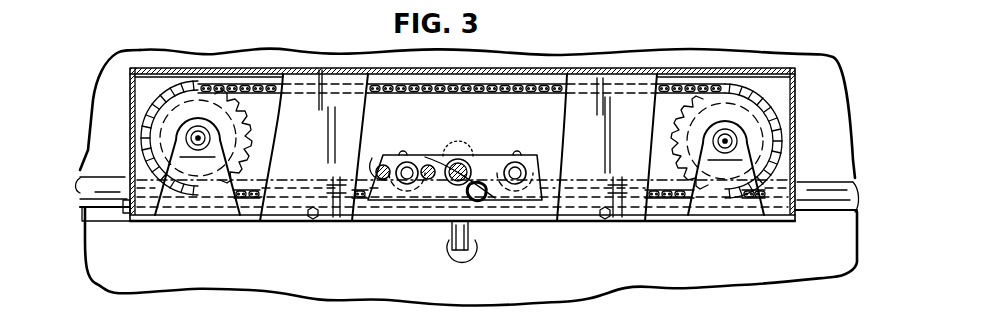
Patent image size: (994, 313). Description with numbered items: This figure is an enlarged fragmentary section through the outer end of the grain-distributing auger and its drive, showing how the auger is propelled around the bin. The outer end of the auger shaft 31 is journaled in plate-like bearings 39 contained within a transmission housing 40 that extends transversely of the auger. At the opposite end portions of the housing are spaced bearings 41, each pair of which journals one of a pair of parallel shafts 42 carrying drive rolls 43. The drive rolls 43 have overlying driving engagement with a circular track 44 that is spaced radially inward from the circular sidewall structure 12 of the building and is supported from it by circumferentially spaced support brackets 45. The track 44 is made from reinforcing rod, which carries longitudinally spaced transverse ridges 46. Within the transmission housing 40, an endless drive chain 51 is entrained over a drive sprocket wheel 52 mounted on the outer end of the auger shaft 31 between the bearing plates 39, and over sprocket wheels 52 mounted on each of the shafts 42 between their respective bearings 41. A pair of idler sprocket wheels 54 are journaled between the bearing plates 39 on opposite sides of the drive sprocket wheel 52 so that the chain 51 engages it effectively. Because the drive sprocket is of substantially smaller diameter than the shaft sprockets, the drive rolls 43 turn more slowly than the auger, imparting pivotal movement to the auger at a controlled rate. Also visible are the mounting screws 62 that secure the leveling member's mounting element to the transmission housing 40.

The circular sidewall structure 12 is at (93, 135).
The auger shaft 31 is at (462, 160).
The plate-like bearings 39 is at (428, 198).
The transmission housing 40 is at (311, 73).
The bearings 41 is at (192, 172).
The parallel shafts 42 is at (195, 139).
The drive rolls 43 is at (160, 118).
The circular track 44 is at (95, 213).
The support brackets 45 is at (455, 249).
The transverse ridges 46 is at (123, 178).
The endless drive chain 51 is at (497, 84).
The sprocket wheel 52 is at (248, 140).
The idler sprocket wheels 54 is at (410, 162).
The mounting screws 62 is at (383, 167).